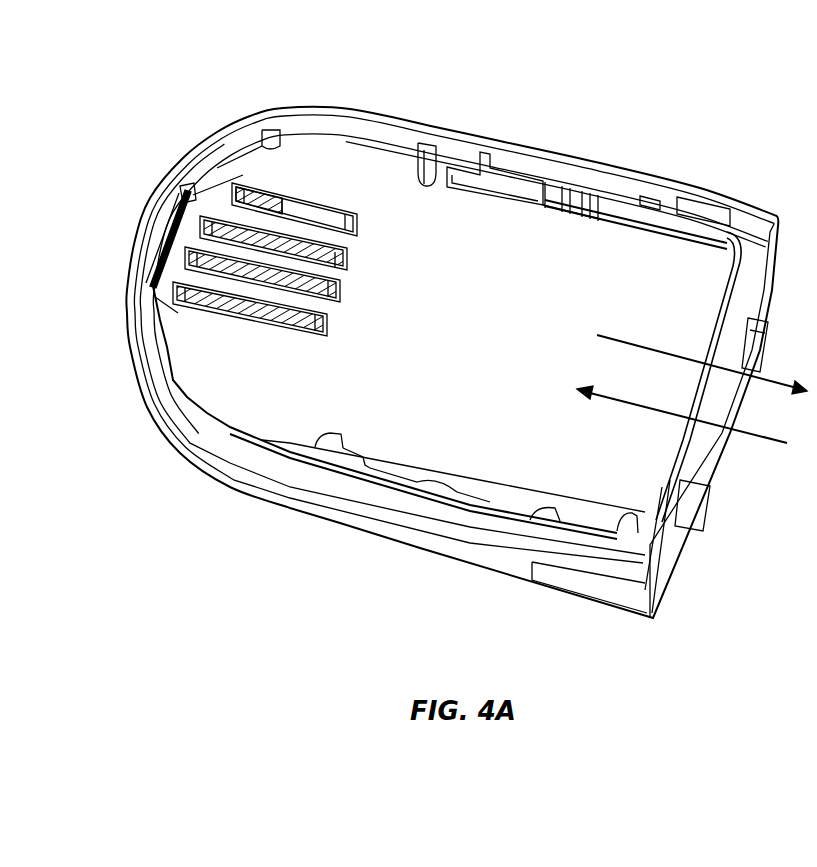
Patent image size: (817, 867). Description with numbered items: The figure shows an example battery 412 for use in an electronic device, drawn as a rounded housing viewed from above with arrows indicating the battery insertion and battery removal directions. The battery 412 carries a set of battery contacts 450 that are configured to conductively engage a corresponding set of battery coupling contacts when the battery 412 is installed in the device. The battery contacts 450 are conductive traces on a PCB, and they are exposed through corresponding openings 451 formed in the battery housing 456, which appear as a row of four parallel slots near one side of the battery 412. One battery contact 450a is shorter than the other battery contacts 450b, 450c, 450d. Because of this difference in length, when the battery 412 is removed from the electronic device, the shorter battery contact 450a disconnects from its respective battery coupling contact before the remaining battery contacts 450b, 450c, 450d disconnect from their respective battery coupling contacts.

The battery 412 is at (569, 88).
The battery contacts 450 is at (180, 227).
The battery contact 450a is at (280, 193).
The battery contact 450b is at (340, 268).
The battery contact 450c is at (320, 303).
The battery contact 450d is at (280, 322).
The openings 451 is at (343, 252).
The battery housing 456 is at (227, 367).